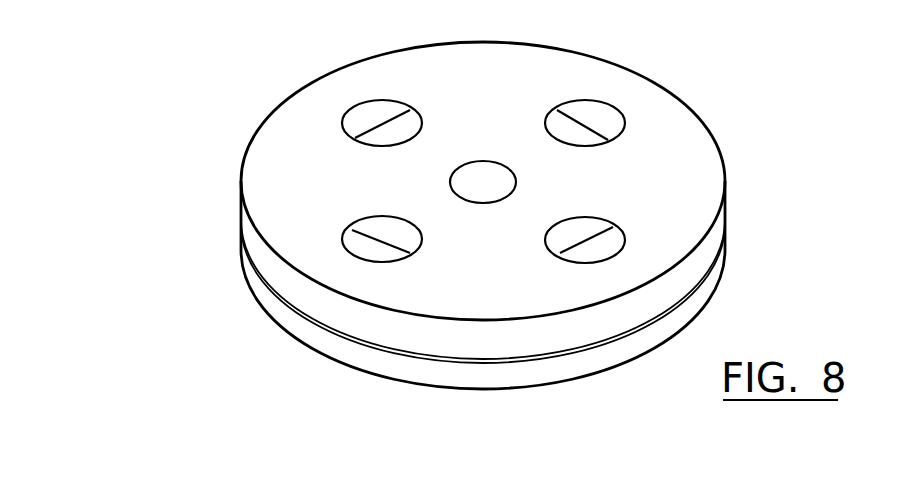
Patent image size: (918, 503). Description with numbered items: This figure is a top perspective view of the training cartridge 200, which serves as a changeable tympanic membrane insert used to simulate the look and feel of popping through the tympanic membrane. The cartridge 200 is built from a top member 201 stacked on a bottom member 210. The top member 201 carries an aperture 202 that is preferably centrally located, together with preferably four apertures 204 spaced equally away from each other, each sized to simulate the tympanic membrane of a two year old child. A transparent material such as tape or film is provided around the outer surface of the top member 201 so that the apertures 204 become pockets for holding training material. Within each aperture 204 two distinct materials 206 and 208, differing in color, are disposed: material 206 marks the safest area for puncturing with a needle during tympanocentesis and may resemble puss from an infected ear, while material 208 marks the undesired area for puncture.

The training cartridge 200 is at (182, 250).
The top member 201 is at (708, 255).
The aperture 202 is at (517, 183).
The apertures 204 is at (627, 108).
The material 206 is at (415, 118).
The material 208 is at (358, 118).
The bottom member 210 is at (698, 303).